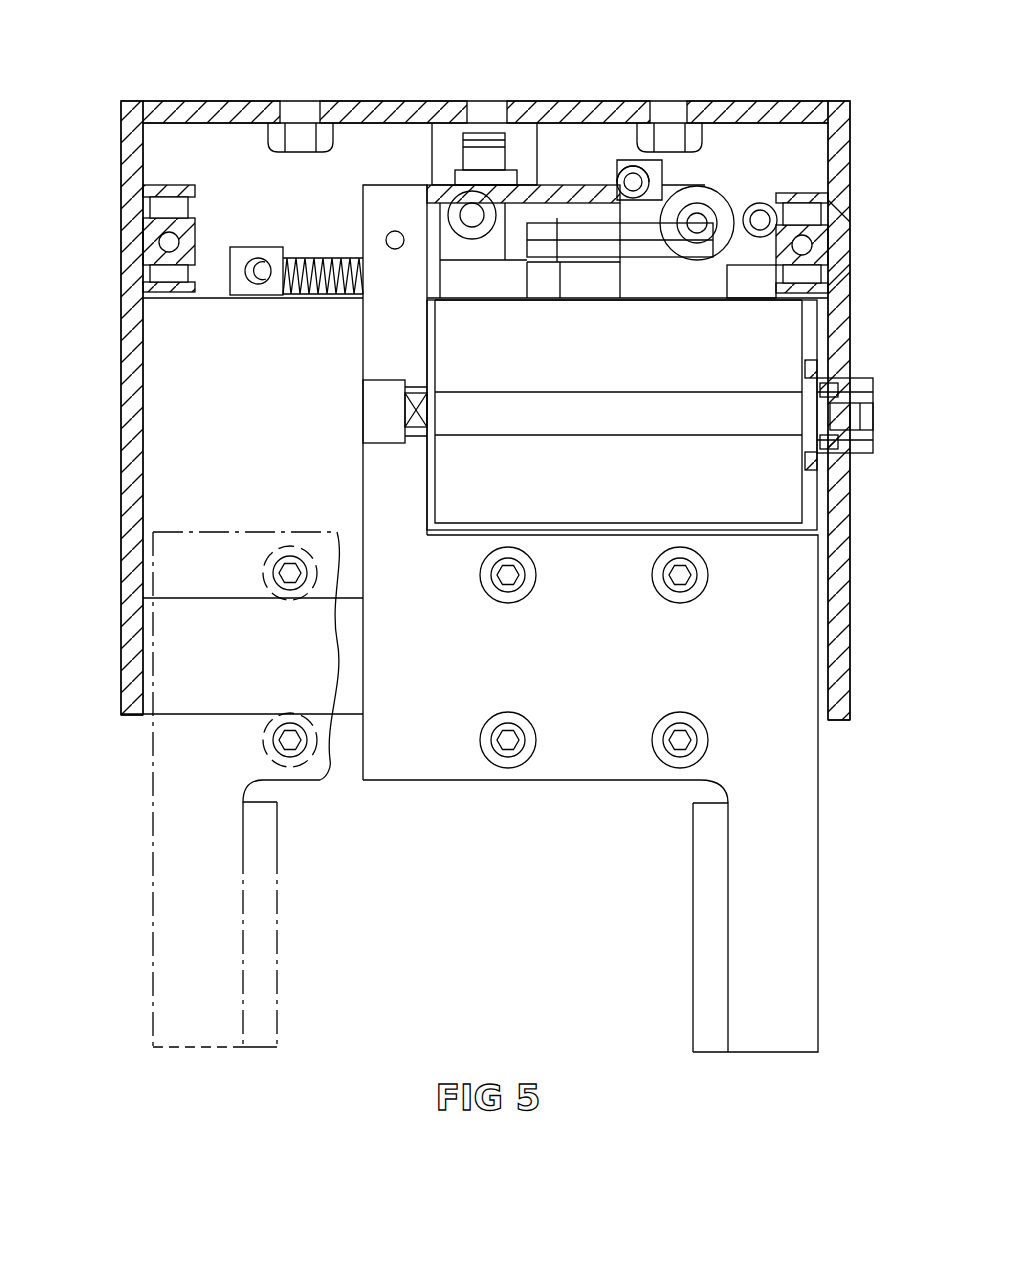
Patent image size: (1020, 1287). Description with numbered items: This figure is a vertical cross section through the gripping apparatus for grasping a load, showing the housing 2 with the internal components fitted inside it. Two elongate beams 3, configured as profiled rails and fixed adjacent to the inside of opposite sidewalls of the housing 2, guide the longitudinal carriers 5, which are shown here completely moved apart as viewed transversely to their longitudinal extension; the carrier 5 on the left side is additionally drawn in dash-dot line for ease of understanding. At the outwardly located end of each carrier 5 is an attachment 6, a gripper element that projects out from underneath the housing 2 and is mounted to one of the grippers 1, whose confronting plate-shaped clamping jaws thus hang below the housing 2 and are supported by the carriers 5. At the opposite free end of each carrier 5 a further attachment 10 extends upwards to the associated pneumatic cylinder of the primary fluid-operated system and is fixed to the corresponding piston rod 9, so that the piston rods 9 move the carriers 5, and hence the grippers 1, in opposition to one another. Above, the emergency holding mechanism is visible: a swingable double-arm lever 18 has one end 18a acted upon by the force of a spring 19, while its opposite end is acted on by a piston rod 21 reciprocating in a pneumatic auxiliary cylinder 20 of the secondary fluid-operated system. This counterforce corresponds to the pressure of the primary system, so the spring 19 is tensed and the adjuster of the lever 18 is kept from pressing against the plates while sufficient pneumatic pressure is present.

The gripper 1 is at (258, 1028).
The housing 2 is at (130, 393).
The elongate beam 3 is at (347, 660).
The longitudinal carrier 5 is at (603, 723).
The attachment 6 is at (180, 1015).
The piston rod 9 is at (435, 360).
The attachment 10 is at (397, 187).
The double-arm lever 18 is at (547, 230).
The end of the double-arm lever 18a is at (755, 335).
The spring 19 is at (292, 250).
The pneumatic auxiliary cylinder 20 is at (660, 167).
The piston rod 21 is at (698, 223).